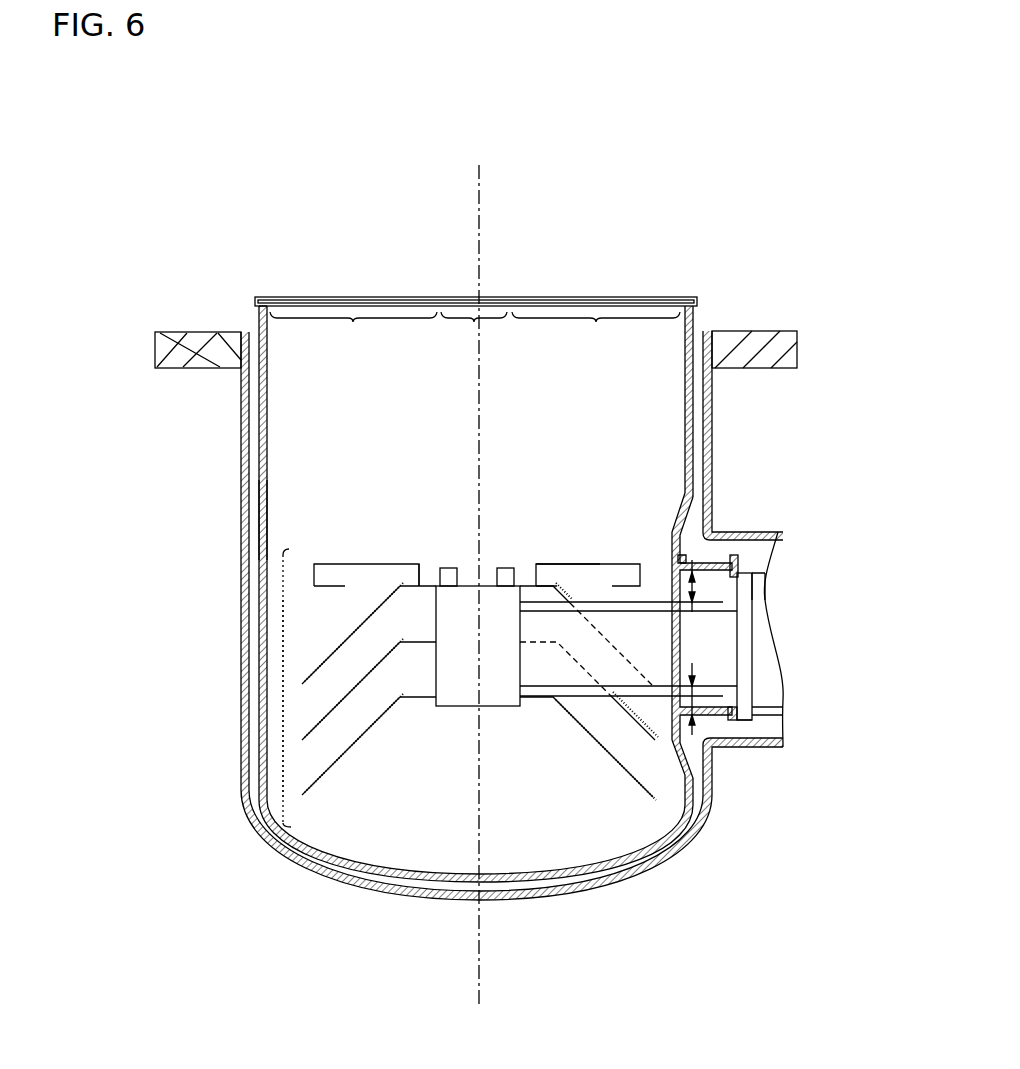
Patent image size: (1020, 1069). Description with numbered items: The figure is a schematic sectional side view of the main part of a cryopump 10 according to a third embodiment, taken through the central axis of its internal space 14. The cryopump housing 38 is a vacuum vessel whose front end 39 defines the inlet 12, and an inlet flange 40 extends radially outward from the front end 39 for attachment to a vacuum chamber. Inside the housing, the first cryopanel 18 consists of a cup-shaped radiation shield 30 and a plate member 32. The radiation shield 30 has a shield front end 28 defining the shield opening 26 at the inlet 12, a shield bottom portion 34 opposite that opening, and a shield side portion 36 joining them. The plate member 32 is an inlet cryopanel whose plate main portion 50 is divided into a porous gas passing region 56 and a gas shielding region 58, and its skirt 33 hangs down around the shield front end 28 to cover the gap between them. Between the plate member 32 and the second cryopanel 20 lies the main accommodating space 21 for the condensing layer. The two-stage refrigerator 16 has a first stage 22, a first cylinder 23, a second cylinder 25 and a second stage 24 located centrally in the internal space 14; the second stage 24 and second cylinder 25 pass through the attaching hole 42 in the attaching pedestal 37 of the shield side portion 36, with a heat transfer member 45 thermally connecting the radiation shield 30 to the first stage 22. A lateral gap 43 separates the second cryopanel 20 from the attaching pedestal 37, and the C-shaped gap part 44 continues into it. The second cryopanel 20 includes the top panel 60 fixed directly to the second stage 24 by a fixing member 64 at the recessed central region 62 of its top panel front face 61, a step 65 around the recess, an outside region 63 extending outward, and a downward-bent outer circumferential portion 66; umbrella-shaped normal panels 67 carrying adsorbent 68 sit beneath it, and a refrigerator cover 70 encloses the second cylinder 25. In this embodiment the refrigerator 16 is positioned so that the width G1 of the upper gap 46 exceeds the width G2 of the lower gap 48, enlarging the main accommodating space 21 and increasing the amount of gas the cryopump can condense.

The cryopump 10 is at (152, 168).
The inlet 12 is at (548, 290).
The internal space 14 is at (673, 835).
The refrigerator 16 is at (762, 548).
The first cryopanel 18 is at (122, 228).
The second cryopanel 20 is at (283, 690).
The main accommodating space 21 is at (370, 417).
The first stage 22 is at (748, 722).
The first cylinder 23 is at (732, 713).
The second stage 24 is at (447, 707).
The second cylinder 25 is at (650, 680).
The shield opening 26 is at (642, 335).
The shield front end 28 is at (692, 342).
The radiation shield 30 is at (240, 388).
The plate member 32 is at (283, 296).
The skirt 33 is at (255, 310).
The shield bottom portion 34 is at (310, 873).
The shield side portion 36 is at (262, 520).
The attaching pedestal 37 is at (678, 545).
The cryopump housing 38 is at (246, 768).
The front end 39 is at (707, 340).
The inlet flange 40 is at (752, 345).
The attaching hole 42 is at (665, 702).
The lateral gap 43 is at (660, 568).
The gap part 44 is at (275, 562).
The heat transfer member 45 is at (740, 563).
The upper gap 46 is at (707, 597).
The lower gap 48 is at (748, 703).
The plate main portion 50 is at (345, 297).
The gas passing region 56 is at (475, 331).
The gas shielding region 58 is at (474, 331).
The top panel 60 is at (339, 560).
The top panel front face 61 is at (585, 505).
The central region 62 is at (503, 568).
The outside region 63 is at (556, 564).
The fixing member 64 is at (448, 568).
The step 65 is at (419, 584).
The outer circumferential portion 66 is at (643, 575).
The normal panel 67 is at (357, 742).
The adsorbent 68 is at (357, 758).
The refrigerator cover 70 is at (600, 695).
The width of the upper gap G1 is at (690, 600).
The width of the lower gap G2 is at (692, 670).